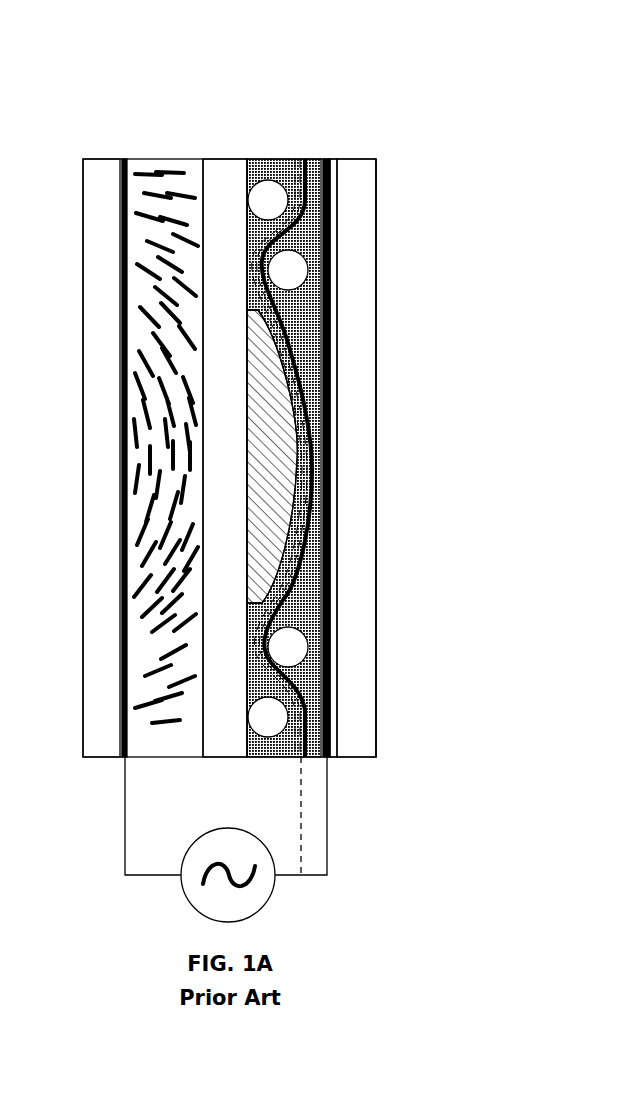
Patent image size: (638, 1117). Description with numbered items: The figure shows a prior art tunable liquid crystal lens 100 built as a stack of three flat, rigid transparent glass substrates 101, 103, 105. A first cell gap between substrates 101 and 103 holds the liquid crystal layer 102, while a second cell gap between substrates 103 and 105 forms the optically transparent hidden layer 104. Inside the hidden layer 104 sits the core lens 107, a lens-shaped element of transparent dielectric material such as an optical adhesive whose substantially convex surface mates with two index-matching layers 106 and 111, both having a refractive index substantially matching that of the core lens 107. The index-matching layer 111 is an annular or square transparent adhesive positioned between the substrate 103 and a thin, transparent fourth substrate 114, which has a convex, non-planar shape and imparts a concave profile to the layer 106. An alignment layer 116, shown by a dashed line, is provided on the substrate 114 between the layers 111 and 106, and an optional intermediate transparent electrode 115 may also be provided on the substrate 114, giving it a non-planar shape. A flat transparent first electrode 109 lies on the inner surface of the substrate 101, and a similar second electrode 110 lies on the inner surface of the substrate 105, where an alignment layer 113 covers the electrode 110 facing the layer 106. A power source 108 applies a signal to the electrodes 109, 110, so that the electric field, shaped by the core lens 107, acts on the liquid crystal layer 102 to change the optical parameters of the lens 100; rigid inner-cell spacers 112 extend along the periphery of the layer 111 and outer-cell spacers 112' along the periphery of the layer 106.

The tunable liquid crystal lens 100 is at (187, 28).
The substrate 101 is at (103, 163).
The liquid crystal layer 102 is at (203, 157).
The substrate 103 is at (223, 163).
The hidden layer 104 is at (321, 159).
The substrate 105 is at (350, 163).
The index-matching layer 106 is at (313, 233).
The core lens 107 is at (275, 448).
The power source 108 is at (188, 900).
The first electrode 109 is at (120, 712).
The second electrode 110 is at (333, 715).
The index-matching layer 111 is at (265, 167).
The inner-cell spacer 112 is at (325, 479).
The outer-cell spacer 112' is at (348, 458).
The alignment layer 113 is at (340, 530).
The fourth substrate 114 is at (330, 597).
The intermediate electrode 115 is at (247, 670).
The alignment layer 116 is at (314, 385).